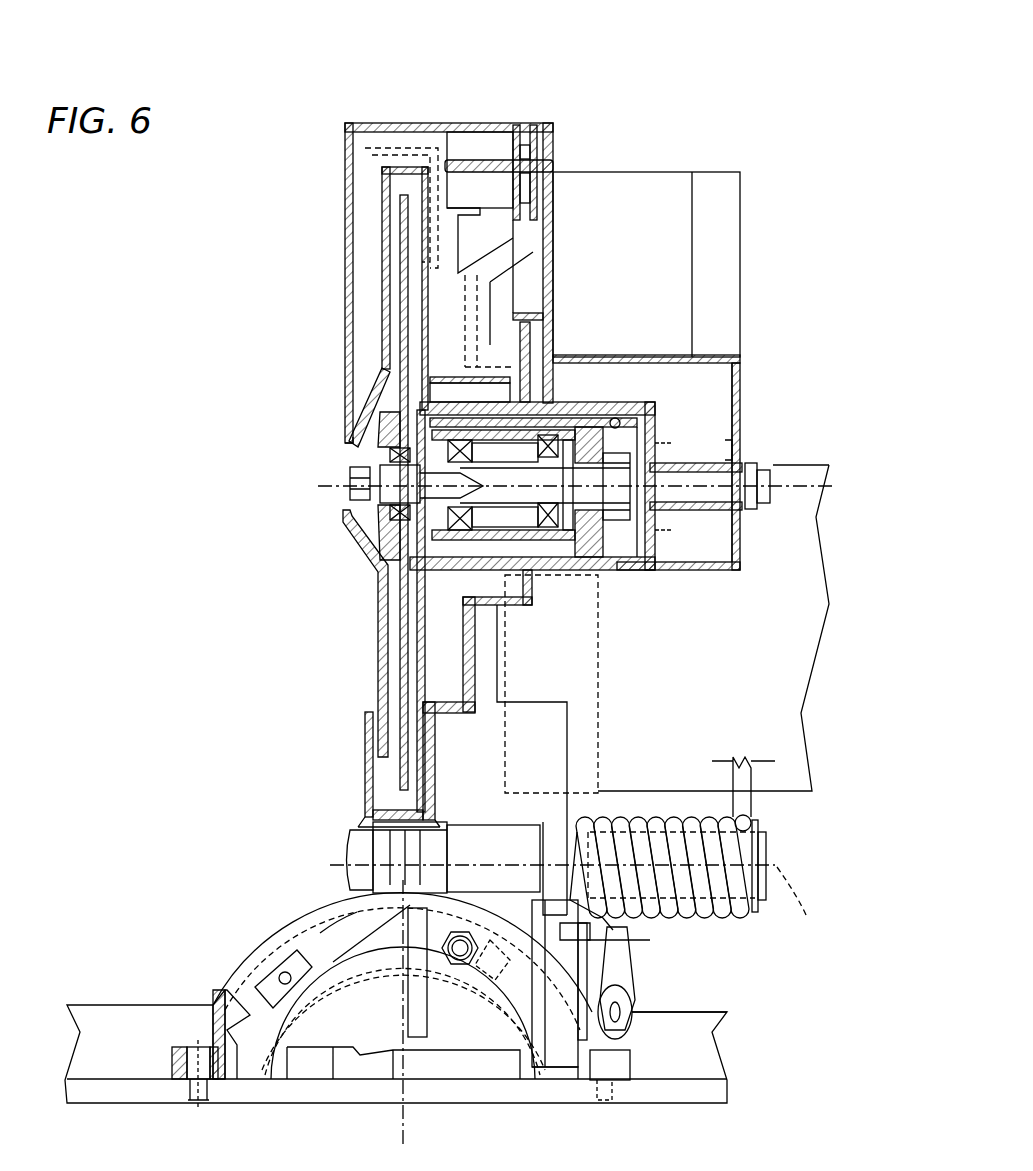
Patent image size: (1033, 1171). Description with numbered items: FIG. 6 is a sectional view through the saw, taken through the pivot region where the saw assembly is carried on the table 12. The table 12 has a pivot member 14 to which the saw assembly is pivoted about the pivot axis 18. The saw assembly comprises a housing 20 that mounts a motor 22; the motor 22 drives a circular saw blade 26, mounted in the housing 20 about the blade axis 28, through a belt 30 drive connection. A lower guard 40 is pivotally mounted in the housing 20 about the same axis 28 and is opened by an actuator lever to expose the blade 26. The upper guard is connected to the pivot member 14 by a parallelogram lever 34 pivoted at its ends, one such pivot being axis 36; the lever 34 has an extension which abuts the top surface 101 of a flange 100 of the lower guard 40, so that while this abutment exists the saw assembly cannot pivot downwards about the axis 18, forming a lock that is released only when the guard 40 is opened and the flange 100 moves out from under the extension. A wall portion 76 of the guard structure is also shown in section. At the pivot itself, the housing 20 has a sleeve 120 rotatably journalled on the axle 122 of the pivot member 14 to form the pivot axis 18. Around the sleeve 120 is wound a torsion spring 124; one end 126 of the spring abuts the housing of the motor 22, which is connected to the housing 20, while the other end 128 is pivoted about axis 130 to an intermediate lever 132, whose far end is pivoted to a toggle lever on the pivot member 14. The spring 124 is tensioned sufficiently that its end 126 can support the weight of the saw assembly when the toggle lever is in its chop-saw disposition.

The table 12 is at (283, 1090).
The pivot member 14 is at (508, 908).
The pivot axis 18 is at (597, 883).
The housing 20 is at (560, 575).
The motor 22 is at (773, 641).
The circular saw blade 26 is at (400, 290).
The blade axis 28 is at (794, 486).
The belt 30 is at (450, 548).
The parallelogram lever 34 is at (528, 130).
The pivot axis of parallelogram lever 36 is at (565, 166).
The lower guard 40 is at (345, 206).
The flange 76 is at (383, 365).
The flange 100 is at (530, 345).
The top surface 101 is at (530, 312).
The sleeve 120 is at (757, 821).
The axle 122 is at (768, 847).
The torsion spring 124 is at (667, 905).
The spring end 126 is at (747, 783).
The other spring end 128 is at (585, 942).
The pivot axis of spring end 130 is at (640, 945).
The intermediate lever 132 is at (567, 945).